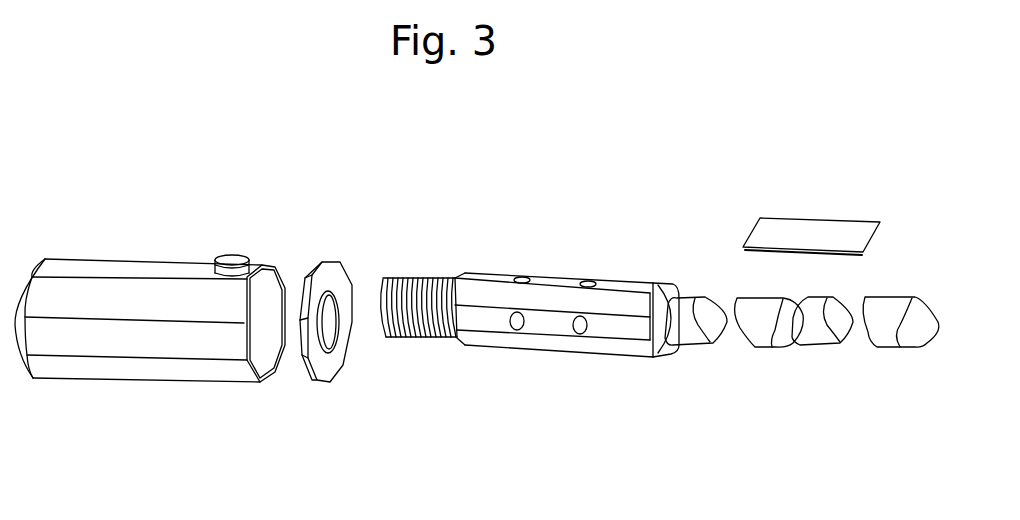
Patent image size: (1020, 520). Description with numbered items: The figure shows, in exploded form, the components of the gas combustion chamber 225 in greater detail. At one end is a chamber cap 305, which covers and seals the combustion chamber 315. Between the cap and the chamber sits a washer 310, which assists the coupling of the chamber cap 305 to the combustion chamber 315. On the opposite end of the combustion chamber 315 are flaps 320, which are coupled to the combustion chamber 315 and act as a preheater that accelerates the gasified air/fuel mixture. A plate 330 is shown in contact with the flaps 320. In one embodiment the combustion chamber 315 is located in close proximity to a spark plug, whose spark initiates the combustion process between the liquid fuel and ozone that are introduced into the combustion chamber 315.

The gas combustion chamber 225 is at (332, 204).
The chamber cap 305 is at (130, 384).
The washer 310 is at (318, 383).
The combustion chamber 315 is at (515, 353).
The flaps 320 is at (667, 363).
The plate 330 is at (818, 217).